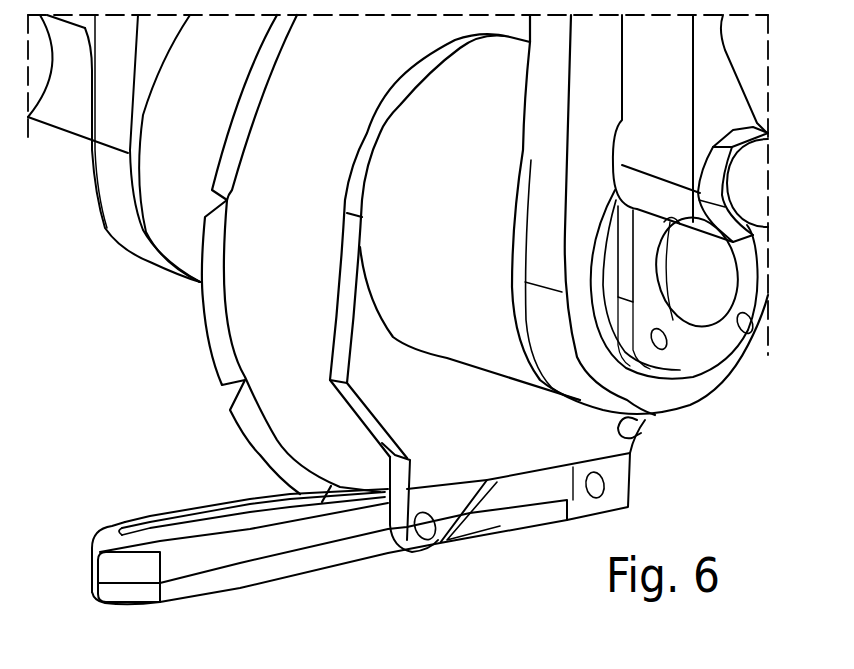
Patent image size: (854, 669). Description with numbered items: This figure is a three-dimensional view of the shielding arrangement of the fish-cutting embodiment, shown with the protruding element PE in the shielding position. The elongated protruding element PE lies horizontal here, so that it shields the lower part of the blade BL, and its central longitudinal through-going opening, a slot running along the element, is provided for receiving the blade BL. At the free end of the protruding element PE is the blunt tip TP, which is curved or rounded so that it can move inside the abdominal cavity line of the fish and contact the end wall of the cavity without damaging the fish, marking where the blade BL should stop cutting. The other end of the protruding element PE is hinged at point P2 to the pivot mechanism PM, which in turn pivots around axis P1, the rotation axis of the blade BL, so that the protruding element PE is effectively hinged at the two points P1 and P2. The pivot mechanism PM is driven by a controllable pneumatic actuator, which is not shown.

The blade BL is at (366, 258).
The pivot mechanism PM is at (564, 231).
The axis P1 is at (697, 277).
The point P2 is at (427, 528).
The protruding element PE is at (218, 568).
The blunt tip TP is at (125, 567).